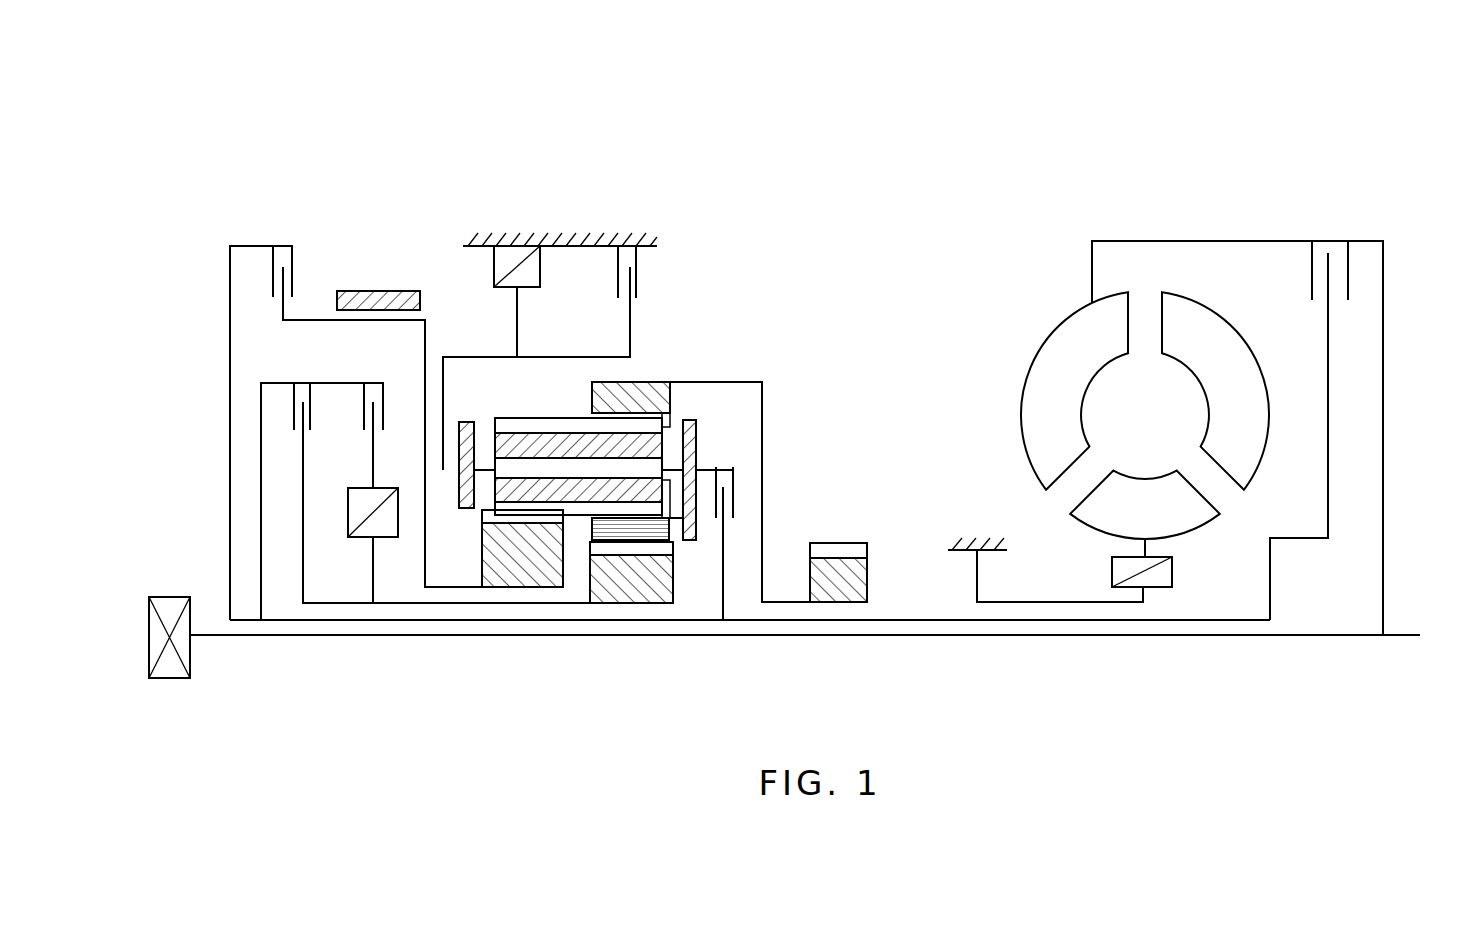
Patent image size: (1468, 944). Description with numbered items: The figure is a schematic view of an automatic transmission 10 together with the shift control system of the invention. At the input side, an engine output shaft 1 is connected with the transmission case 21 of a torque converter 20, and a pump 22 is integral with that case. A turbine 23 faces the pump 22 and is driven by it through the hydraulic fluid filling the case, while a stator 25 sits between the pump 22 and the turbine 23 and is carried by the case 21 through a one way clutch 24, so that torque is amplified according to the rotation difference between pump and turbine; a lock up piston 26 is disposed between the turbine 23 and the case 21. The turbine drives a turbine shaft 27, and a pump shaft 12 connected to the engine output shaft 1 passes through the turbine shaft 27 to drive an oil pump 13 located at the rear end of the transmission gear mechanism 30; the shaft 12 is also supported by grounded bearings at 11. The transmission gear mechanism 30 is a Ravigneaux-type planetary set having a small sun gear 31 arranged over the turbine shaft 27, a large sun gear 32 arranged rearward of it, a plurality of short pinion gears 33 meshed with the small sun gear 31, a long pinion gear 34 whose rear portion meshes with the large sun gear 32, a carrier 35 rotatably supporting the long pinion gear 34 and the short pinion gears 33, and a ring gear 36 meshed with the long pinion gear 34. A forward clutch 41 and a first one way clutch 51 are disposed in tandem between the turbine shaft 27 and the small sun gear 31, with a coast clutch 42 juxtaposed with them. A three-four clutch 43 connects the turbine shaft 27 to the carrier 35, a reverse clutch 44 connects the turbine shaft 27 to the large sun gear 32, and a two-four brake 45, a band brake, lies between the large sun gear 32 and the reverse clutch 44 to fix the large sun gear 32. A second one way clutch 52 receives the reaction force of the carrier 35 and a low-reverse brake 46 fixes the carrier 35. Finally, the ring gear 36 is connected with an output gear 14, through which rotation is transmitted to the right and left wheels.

The output shaft 1 is at (1404, 632).
The automatic transmission 10 is at (1402, 216).
The fixed ground / housing support 11 is at (560, 233).
The pump shaft 12 is at (285, 637).
The oil pump 13 is at (168, 679).
The output gear 14 is at (830, 548).
The torque converter 20 is at (1052, 268).
The transmission case 21 is at (1228, 240).
The pump 22 is at (1048, 343).
The turbine 23 is at (1230, 342).
The one way clutch 24 is at (1173, 575).
The stator 25 is at (1135, 475).
The lock up piston 26 is at (1350, 280).
The turbine shaft 27 is at (912, 619).
The transmission gear mechanism 30 is at (762, 372).
The small sun gear 31 is at (633, 604).
The large sun gear 32 is at (520, 588).
The short pinion gears 33 is at (662, 538).
The long pinion gear 34 is at (527, 420).
The carrier 35 is at (690, 420).
The ring gear 36 is at (655, 381).
The forward clutch 41 is at (366, 402).
The coast clutch 42 is at (294, 410).
The 3-4 clutch 43 is at (723, 487).
The reverse clutch 44 is at (285, 280).
The 2-4 brake 45 is at (396, 290).
The low-reverse brake 46 is at (638, 283).
The first one way clutch 51 is at (349, 508).
The second one way clutch 52 is at (541, 270).